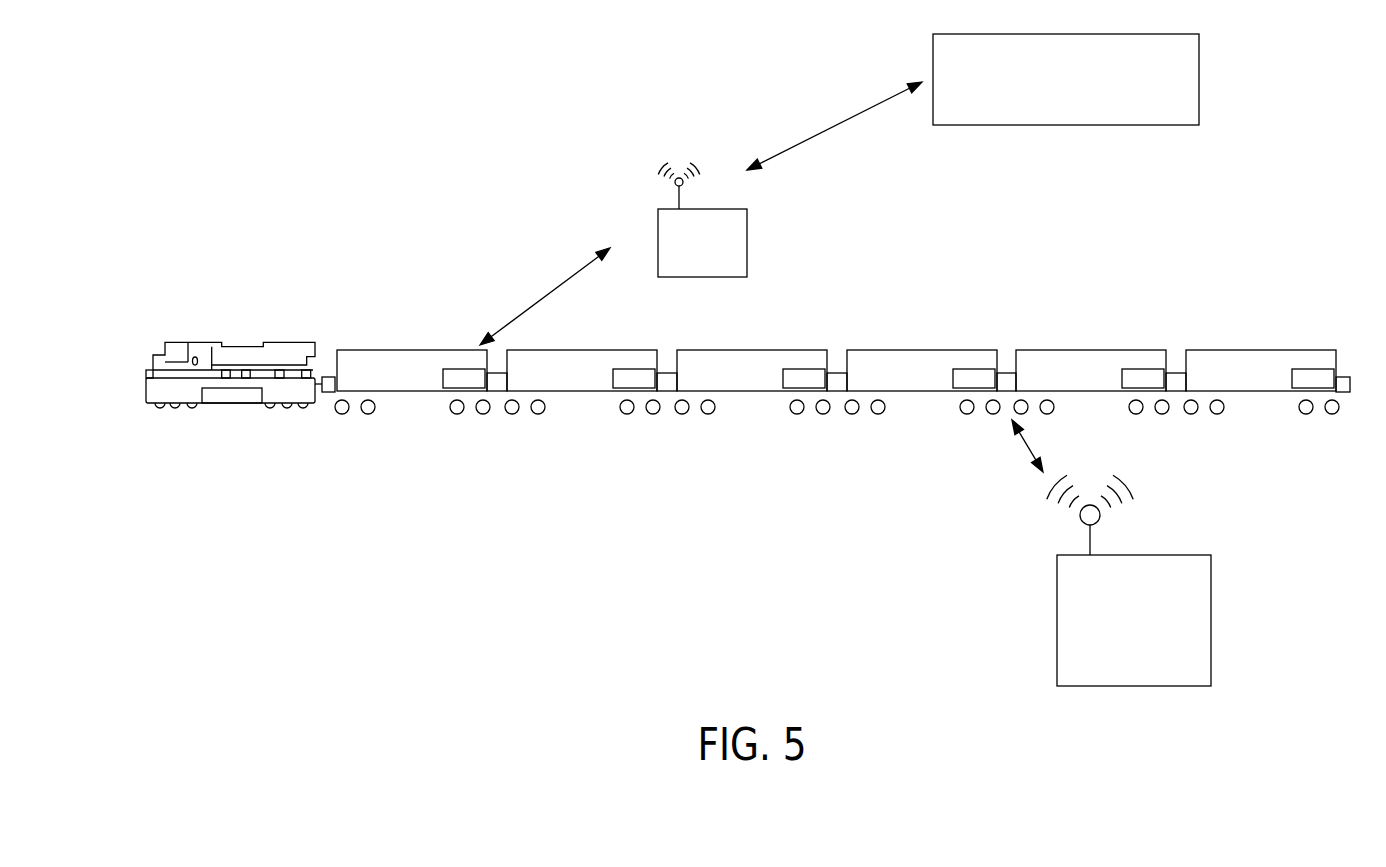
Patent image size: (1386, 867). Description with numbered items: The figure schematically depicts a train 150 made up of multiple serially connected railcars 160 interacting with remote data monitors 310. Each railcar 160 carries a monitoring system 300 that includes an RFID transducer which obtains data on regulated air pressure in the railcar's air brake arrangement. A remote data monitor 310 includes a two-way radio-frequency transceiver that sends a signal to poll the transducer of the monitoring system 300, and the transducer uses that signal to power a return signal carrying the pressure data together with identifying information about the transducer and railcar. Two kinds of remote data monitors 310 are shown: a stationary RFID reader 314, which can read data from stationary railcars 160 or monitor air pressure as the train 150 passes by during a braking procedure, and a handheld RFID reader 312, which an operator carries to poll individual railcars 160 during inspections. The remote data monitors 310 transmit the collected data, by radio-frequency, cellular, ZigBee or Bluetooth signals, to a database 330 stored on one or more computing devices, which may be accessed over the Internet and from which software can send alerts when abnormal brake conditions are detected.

The train 150 is at (145, 340).
The railcars 160 is at (385, 350).
The monitoring system 300 is at (464, 388).
The remote data monitor 310 is at (845, 384).
The stationary RFID reader 314 is at (667, 258).
The handheld RFID reader 312 is at (1098, 637).
The database 330 is at (1051, 93).